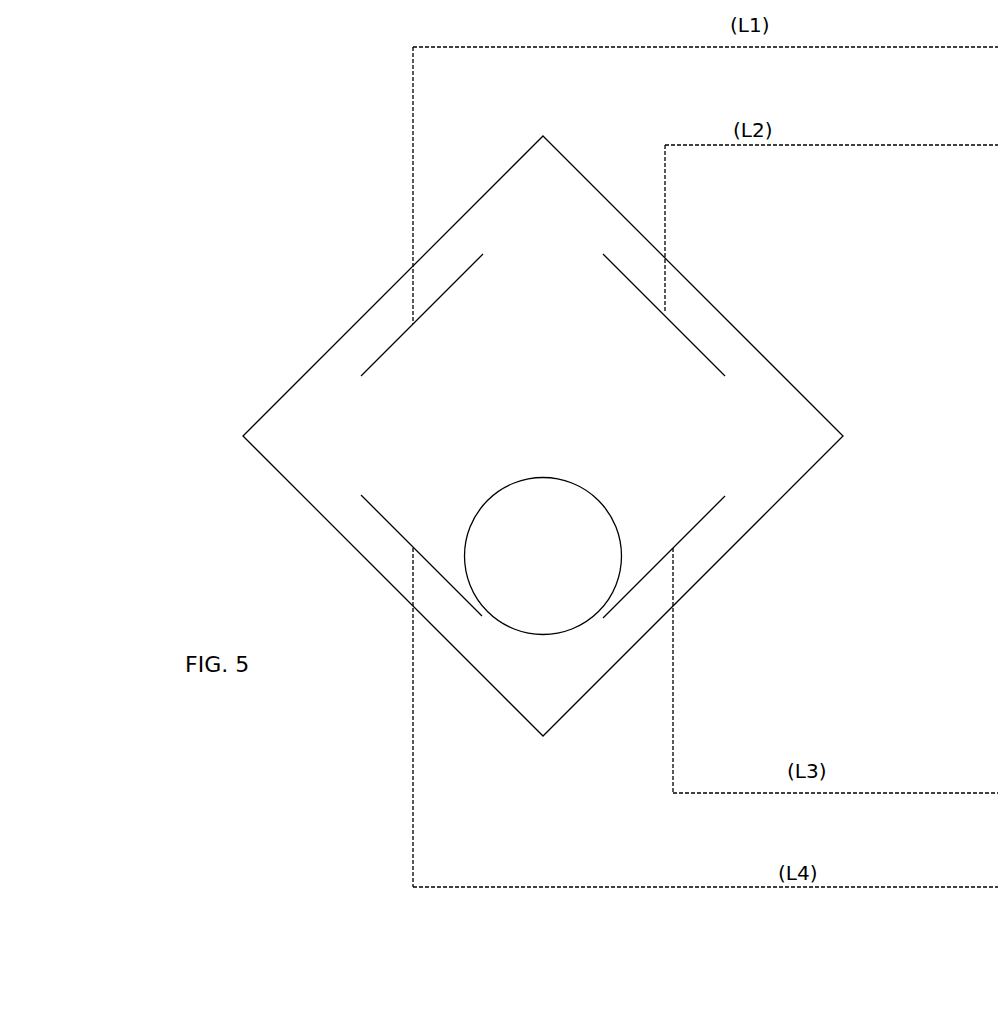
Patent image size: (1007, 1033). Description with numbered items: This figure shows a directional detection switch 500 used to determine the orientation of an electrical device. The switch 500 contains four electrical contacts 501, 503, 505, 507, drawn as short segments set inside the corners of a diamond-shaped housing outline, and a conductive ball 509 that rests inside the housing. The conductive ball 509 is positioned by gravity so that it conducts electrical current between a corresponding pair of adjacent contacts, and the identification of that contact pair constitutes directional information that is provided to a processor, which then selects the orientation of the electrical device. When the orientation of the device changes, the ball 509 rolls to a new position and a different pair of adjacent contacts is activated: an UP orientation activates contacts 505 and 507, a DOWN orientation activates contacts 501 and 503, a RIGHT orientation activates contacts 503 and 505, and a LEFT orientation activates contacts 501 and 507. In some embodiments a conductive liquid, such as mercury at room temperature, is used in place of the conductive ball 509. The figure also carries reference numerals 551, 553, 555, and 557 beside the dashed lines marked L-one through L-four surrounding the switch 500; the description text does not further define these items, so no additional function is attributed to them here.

The directional detection switch 500 is at (326, 324).
The electrical contact 501 is at (372, 370).
The electrical contact 503 is at (678, 335).
The electrical contact 505 is at (702, 518).
The electrical contact 507 is at (423, 550).
The conductive ball 509 is at (538, 478).
The first layer L1 551 is at (826, 48).
The second layer L2 553 is at (827, 145).
The third layer L3 555 is at (845, 792).
The fourth layer L4 557 is at (840, 887).